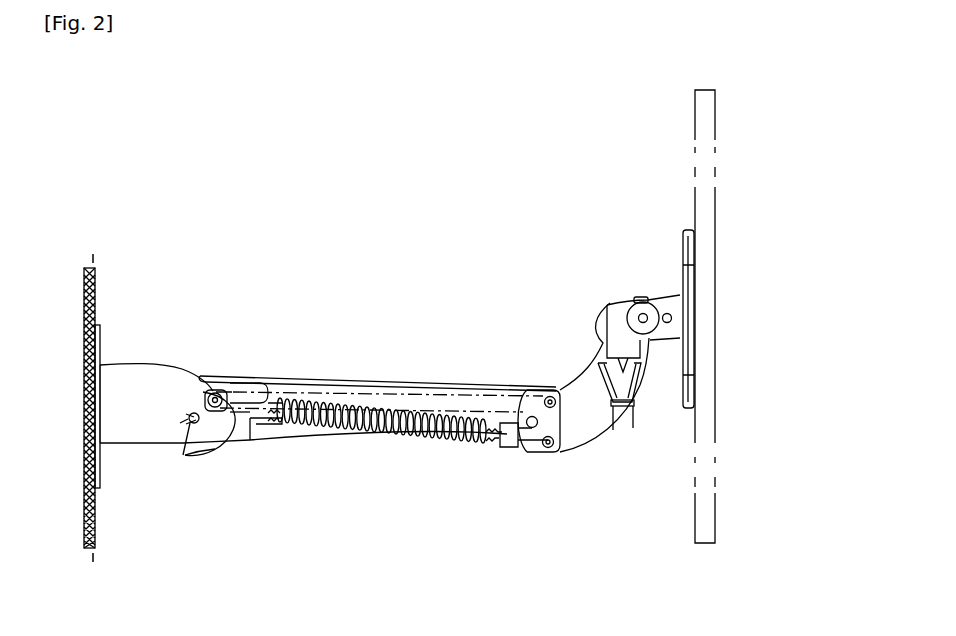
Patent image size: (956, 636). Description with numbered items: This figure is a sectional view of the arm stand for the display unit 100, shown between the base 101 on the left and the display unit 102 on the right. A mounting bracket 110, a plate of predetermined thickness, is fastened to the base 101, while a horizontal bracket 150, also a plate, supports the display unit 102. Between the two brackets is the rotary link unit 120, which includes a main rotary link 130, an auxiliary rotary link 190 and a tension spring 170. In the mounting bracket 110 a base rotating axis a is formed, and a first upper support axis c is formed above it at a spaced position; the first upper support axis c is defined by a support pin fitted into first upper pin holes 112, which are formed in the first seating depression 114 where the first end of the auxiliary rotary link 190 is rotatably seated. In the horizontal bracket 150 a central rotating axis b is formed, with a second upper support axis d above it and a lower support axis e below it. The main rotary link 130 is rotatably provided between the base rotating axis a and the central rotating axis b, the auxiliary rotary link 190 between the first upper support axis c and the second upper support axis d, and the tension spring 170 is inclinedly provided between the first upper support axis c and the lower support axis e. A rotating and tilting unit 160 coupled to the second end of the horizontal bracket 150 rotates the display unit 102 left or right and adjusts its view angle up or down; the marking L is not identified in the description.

The arm stand for the display unit 100 is at (345, 246).
The base 101 is at (101, 472).
The display unit 102 is at (703, 488).
The mounting bracket 110 is at (156, 384).
The first upper pin holes 112 is at (224, 397).
The first seating depression 114 is at (218, 438).
The rotary link unit 120 is at (377, 368).
The main rotary link 130 is at (305, 377).
The horizontal bracket 150 is at (572, 405).
The rotating and tilting unit 160 is at (612, 292).
The tension spring 170 is at (382, 436).
The auxiliary rotary link 190 is at (425, 400).
The base rotating axis a is at (199, 450).
The central rotating axis b is at (510, 432).
The first upper support axis c is at (213, 391).
The second upper support axis d is at (547, 398).
The lower support axis e is at (556, 448).
The notch / lever L is at (249, 424).